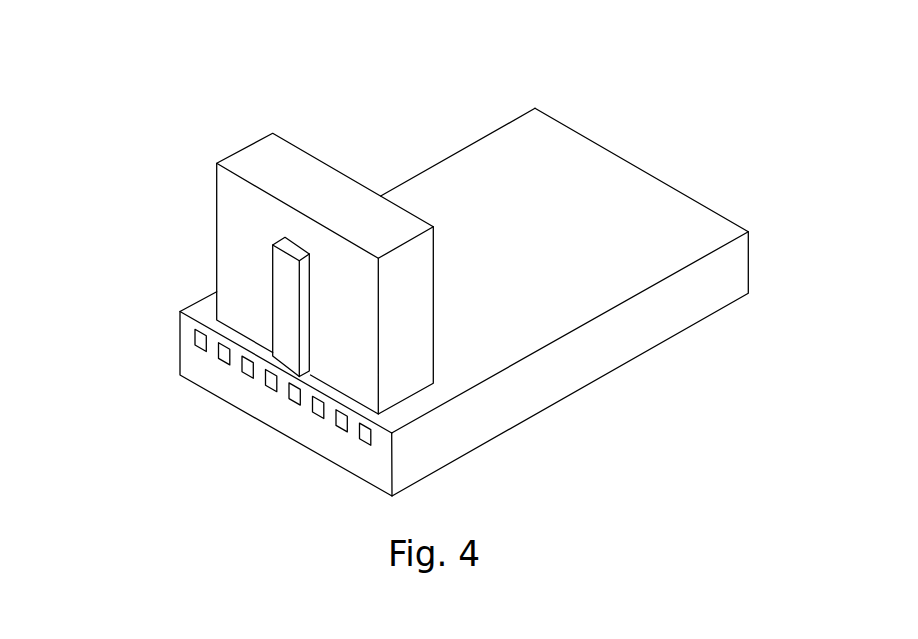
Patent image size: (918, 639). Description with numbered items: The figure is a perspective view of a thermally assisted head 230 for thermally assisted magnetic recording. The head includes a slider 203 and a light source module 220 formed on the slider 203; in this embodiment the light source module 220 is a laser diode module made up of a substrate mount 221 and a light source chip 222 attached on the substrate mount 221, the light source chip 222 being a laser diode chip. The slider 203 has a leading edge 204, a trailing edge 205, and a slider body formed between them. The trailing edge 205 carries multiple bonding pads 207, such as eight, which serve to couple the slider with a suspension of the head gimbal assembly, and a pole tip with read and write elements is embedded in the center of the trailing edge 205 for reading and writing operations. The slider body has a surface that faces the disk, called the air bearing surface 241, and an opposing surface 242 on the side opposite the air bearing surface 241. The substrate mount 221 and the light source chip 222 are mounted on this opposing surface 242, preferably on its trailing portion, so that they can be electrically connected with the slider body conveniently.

The thermally assisted head 230 is at (254, 33).
The light source module 220 is at (90, 150).
The substrate mount 221 is at (263, 162).
The light source chip 222 is at (283, 283).
The slider 203 is at (583, 153).
The opposing surface 242 is at (645, 213).
The leading edge 204 is at (761, 244).
The air bearing surface 241 is at (607, 373).
The trailing edge 205 is at (368, 463).
The bonding pads 207 is at (364, 436).